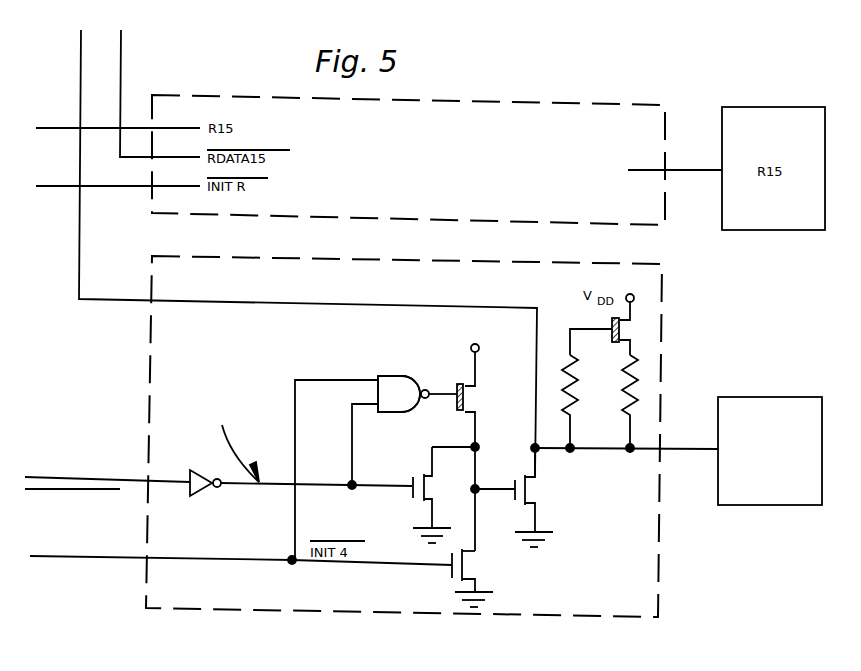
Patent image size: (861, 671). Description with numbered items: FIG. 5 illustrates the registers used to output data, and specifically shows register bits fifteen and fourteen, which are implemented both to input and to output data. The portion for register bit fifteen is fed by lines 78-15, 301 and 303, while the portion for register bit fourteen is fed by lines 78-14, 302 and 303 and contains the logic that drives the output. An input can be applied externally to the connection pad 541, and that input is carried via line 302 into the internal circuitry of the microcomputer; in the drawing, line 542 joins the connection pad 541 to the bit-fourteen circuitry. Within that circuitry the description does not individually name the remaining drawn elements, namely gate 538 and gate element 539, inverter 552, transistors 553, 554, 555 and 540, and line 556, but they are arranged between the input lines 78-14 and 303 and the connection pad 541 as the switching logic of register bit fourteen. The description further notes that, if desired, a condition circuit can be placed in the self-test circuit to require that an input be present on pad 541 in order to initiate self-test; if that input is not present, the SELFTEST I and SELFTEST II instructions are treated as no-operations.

The RDATA15 input line 301 is at (122, 52).
The line 302 is at (82, 252).
The INIT input line 303 is at (48, 188).
The R15 input line 78-15 is at (48, 127).
The R DATA 14 input line 78-14 is at (47, 475).
The NAND gate input 538 is at (372, 379).
The NAND gate 539 is at (400, 385).
The transistor 540 is at (478, 563).
The connection pad 541 is at (775, 410).
The output line 542 is at (688, 447).
The inverter 552 is at (200, 490).
The transistor 553 is at (418, 475).
The transistor 554 is at (470, 400).
The transistor 555 is at (538, 496).
The feedback line 556 is at (350, 476).